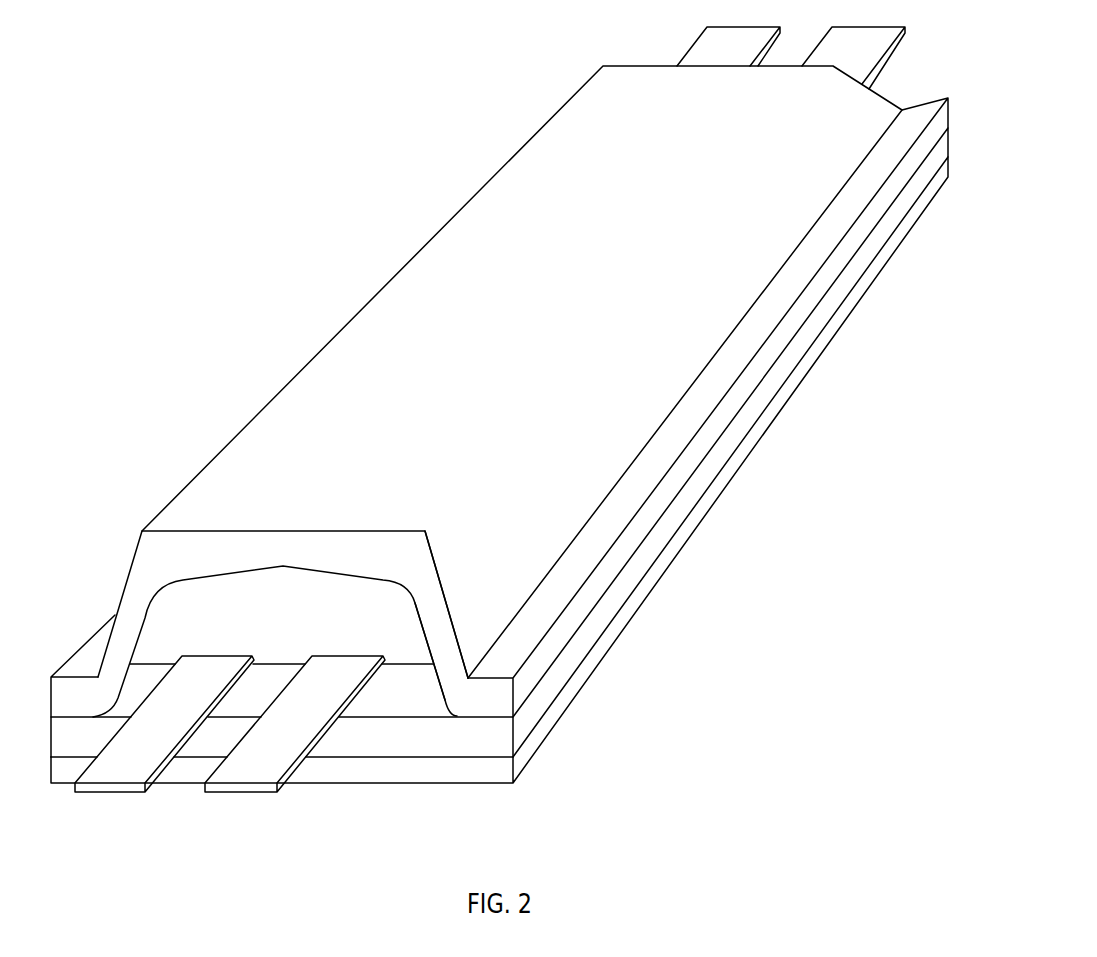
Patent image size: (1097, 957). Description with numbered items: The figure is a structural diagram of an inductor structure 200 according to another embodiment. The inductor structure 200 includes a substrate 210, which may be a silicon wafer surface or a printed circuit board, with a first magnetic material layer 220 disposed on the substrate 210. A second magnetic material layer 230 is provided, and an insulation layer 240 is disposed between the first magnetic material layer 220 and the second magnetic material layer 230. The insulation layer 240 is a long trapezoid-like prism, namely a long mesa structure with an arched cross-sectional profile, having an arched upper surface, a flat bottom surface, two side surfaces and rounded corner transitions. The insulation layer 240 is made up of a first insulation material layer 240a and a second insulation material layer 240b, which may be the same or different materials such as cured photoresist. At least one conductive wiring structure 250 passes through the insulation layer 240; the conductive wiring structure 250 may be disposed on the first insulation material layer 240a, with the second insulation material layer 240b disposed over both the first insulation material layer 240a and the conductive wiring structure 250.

The inductor structure 200 is at (246, 193).
The substrate 210 is at (499, 470).
The first magnetic material layer 220 is at (499, 442).
The second magnetic material layer 230 is at (499, 407).
The insulation layer 240 is at (396, 614).
The first insulation material layer 240a is at (425, 615).
The second insulation material layer 240b is at (281, 684).
The conductive wiring structure 250 is at (230, 724).